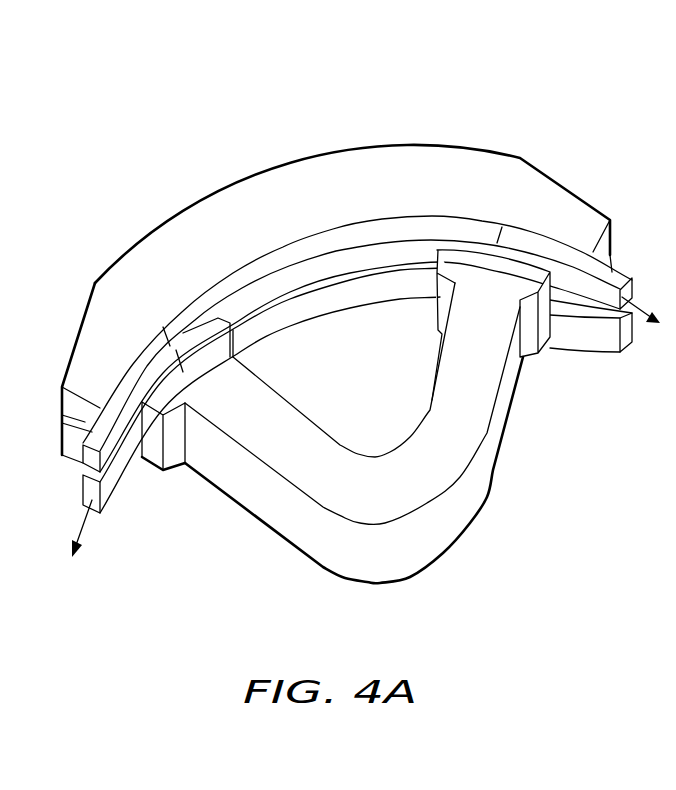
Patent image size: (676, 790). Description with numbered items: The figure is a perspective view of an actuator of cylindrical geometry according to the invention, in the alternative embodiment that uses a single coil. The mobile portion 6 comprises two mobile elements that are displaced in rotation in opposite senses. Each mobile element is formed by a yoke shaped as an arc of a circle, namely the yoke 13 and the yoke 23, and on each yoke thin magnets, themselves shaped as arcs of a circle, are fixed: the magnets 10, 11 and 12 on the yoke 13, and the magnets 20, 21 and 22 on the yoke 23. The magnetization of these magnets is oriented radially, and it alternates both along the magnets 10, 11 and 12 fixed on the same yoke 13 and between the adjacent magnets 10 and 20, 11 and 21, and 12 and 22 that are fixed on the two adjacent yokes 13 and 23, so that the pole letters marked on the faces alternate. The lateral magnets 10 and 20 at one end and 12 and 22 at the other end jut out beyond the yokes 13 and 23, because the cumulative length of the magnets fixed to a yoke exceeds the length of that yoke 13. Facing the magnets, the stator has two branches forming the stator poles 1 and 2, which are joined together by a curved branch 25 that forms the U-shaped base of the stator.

The mobile portion 6 is at (337, 267).
The yoke 13 is at (438, 157).
The magnet 11 is at (238, 288).
The magnet 21 is at (360, 310).
The lateral magnet 10 is at (118, 398).
The lateral magnet 20 is at (105, 496).
The lateral magnet 12 is at (617, 277).
The lateral magnet 22 is at (613, 339).
The yoke 23 is at (72, 445).
The stator pole 1 is at (190, 360).
The stator pole 2 is at (503, 270).
The curved branch 25 is at (430, 553).